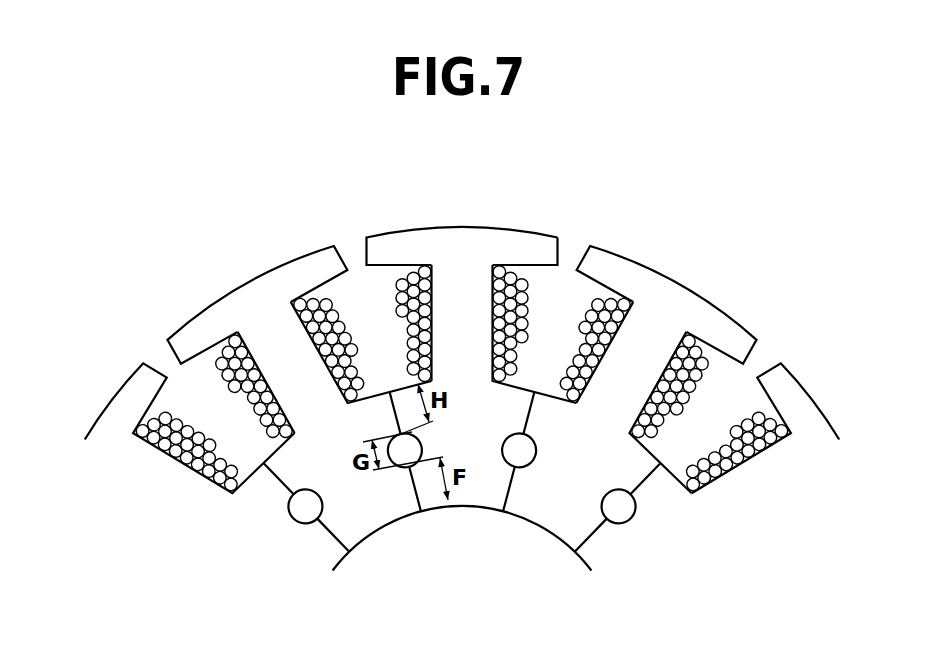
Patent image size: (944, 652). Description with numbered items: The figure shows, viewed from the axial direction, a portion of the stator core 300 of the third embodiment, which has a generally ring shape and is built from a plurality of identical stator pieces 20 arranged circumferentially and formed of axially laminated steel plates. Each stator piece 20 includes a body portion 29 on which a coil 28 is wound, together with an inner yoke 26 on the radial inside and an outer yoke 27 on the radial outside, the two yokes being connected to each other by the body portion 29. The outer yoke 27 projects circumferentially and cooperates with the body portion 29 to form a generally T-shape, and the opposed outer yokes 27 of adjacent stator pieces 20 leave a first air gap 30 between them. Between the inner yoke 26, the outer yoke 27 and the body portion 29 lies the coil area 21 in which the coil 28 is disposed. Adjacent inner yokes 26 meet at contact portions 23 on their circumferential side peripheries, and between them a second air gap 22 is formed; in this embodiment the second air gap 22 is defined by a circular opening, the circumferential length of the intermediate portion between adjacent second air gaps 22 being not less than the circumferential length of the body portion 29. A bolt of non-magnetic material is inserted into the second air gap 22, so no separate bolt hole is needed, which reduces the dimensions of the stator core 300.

The stator core 300 is at (648, 228).
The stator piece 20 is at (395, 228).
The coil area 21 is at (560, 293).
The second air gap 22 is at (502, 448).
The contact portion 23 is at (510, 487).
The inner yoke 26 is at (512, 403).
The outer yoke 27 is at (532, 248).
The coil 28 is at (512, 278).
The body portion 29 is at (453, 303).
The first air gap 30 is at (352, 250).